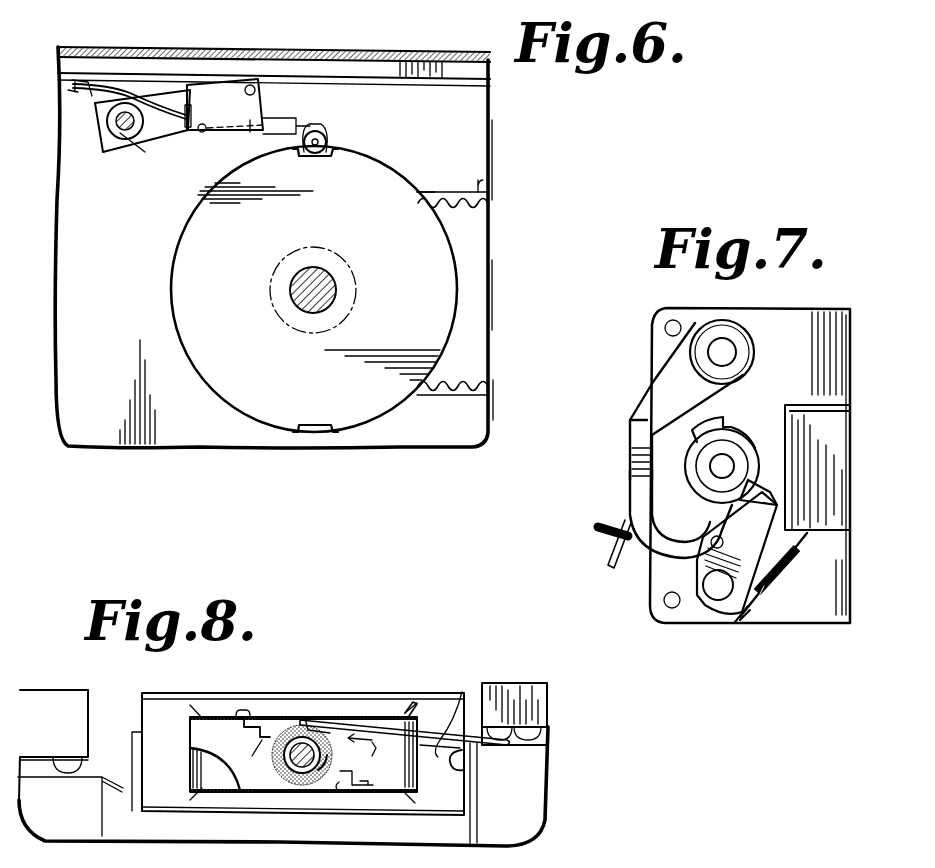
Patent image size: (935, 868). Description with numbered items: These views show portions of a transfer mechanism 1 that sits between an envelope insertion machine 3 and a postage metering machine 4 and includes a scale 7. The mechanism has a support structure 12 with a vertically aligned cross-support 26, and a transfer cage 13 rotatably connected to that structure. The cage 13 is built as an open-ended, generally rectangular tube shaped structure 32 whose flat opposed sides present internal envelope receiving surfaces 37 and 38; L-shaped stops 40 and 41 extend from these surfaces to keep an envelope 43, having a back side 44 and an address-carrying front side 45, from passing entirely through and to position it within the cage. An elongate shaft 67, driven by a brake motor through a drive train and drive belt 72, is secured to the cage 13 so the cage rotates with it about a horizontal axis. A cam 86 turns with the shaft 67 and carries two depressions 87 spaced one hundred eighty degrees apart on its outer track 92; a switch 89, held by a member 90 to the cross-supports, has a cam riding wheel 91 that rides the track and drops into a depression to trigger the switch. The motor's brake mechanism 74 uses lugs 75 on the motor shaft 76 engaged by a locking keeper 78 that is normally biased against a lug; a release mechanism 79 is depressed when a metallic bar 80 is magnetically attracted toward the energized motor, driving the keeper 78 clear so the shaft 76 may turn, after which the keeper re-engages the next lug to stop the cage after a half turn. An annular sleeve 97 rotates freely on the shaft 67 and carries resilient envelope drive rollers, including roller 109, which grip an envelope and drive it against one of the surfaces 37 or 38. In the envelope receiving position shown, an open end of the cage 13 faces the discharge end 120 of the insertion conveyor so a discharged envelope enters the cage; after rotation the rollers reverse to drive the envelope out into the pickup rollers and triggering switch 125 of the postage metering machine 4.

In FIG. 8, the transfer mechanism 1 is at (326, 659).
In FIG. 8, the insertion machine 3 is at (538, 684).
In FIG. 8, the postage metering machine 4 is at (64, 688).
In FIG. 8, the scale 7 is at (326, 846).
In FIG. 6, the support structure 12 is at (280, 48).
In FIG. 8, the support structure 12 is at (182, 692).
In FIG. 8, the transfer cage 13 is at (222, 704).
In FIG. 6, the cross-support 26 is at (274, 247).
In FIG. 8, the tube shaped structure 32 is at (228, 797).
In FIG. 8, the envelope receiving surface 37 is at (372, 752).
In FIG. 8, the envelope receiving surface 38 is at (342, 796).
In FIG. 8, the stop 40 is at (262, 738).
In FIG. 8, the stop 41 is at (368, 778).
In FIG. 8, the envelope 43 is at (432, 714).
In FIG. 8, the first side of envelope 44 is at (455, 714).
In FIG. 8, the second side of envelope 45 is at (442, 750).
In FIG. 6, the elongate shaft 67 is at (298, 310).
In FIG. 8, the elongate shaft 67 is at (288, 762).
In FIG. 6, the drive belt 72 is at (484, 185).
In FIG. 7, the brake mechanism 74 is at (620, 472).
In FIG. 7, the lugs 75 is at (726, 418).
In FIG. 7, the motor shaft 76 is at (732, 460).
In FIG. 7, the locking keeper 78 is at (698, 572).
In FIG. 7, the release mechanism 79 is at (628, 430).
In FIG. 7, the metallic bar 80 is at (604, 550).
In FIG. 6, the cam 86 is at (380, 165).
In FIG. 6, the depressions 87 is at (338, 140).
In FIG. 6, the switch 89 is at (215, 130).
In FIG. 6, the member 90 is at (138, 140).
In FIG. 6, the cam riding wheel 91 is at (330, 140).
In FIG. 6, the outer track 92 is at (400, 200).
In FIG. 8, the annular sleeve 97 is at (306, 716).
In FIG. 8, the envelope drive roller 109 is at (281, 777).
In FIG. 8, the discharge end 120 is at (464, 770).
In FIG. 8, the triggering switch 125 is at (57, 775).